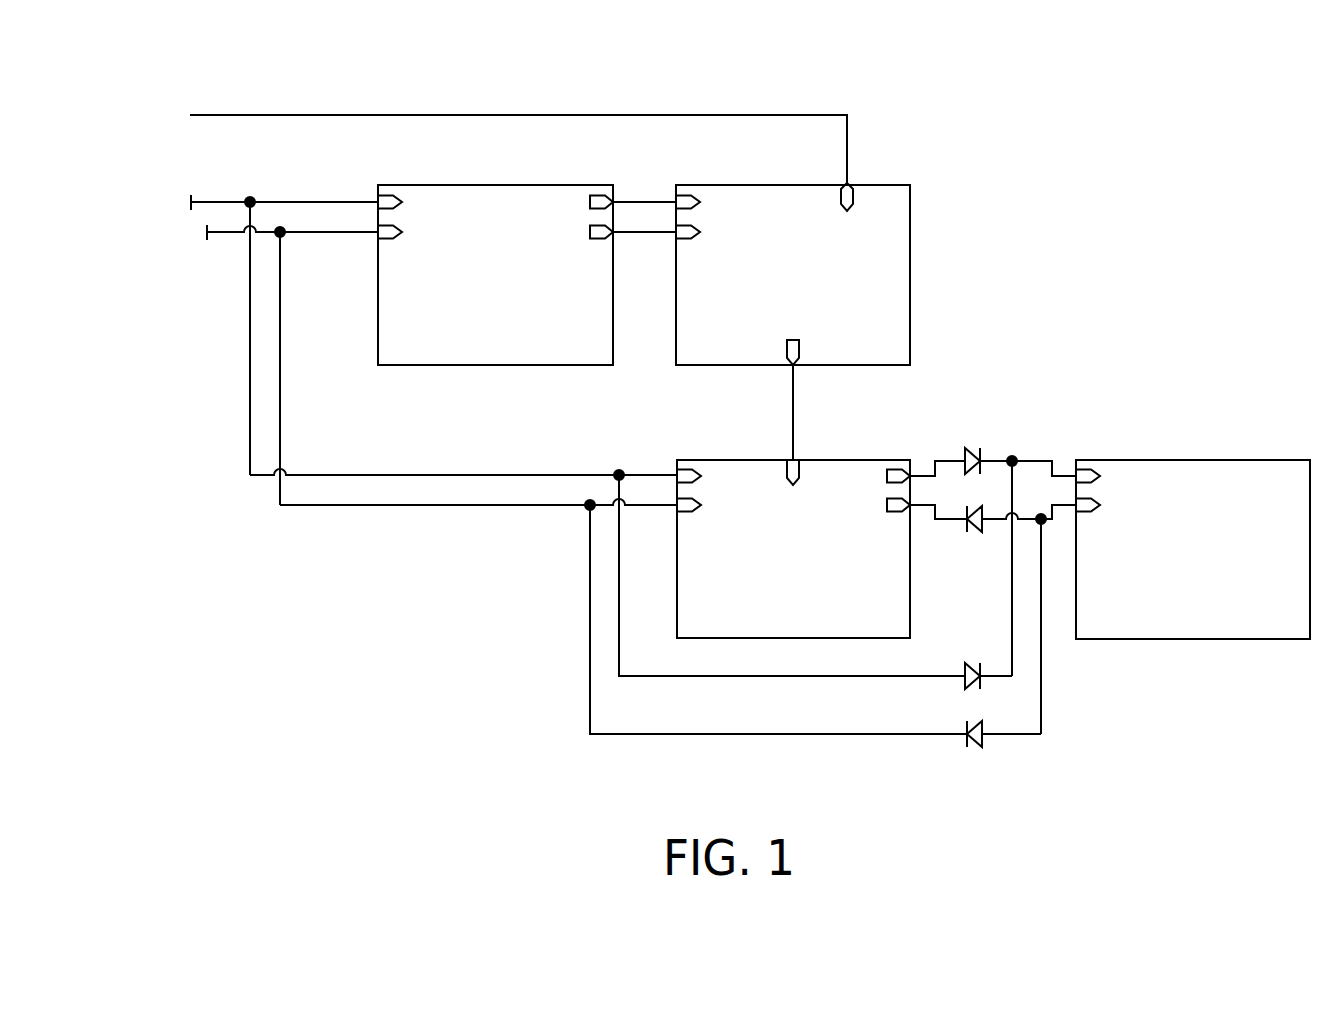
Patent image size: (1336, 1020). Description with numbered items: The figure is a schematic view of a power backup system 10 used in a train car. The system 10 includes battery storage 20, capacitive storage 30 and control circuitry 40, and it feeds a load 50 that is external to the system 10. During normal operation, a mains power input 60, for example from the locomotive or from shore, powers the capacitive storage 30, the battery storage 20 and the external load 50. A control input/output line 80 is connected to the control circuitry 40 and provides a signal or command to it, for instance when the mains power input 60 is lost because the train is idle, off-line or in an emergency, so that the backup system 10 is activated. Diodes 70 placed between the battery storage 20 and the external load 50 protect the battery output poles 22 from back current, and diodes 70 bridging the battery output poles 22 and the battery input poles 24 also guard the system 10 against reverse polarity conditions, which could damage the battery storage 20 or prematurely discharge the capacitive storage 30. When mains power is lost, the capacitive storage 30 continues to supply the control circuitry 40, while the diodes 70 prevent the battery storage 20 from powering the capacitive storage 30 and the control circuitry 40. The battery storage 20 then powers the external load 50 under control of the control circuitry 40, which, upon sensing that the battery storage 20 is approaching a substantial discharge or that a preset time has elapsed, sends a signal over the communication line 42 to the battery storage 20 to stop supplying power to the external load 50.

The power backup system 10 is at (1205, 93).
The battery storage 20 is at (910, 593).
The battery output poles 22 is at (932, 507).
The battery input poles 24 is at (647, 507).
The capacitive storage 30 is at (592, 185).
The control circuitry 40 is at (892, 185).
The communication line 42 is at (795, 397).
The load 50 is at (1231, 460).
The mains power input 60 is at (172, 214).
The diodes 70 is at (988, 482).
The control input/output line 80 is at (309, 114).